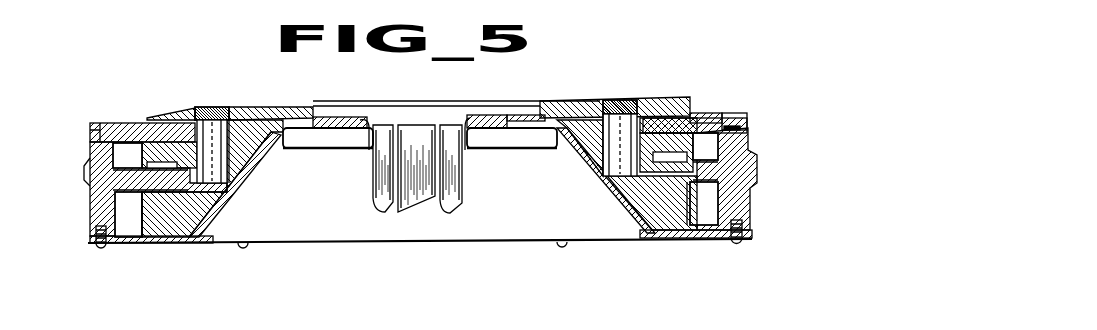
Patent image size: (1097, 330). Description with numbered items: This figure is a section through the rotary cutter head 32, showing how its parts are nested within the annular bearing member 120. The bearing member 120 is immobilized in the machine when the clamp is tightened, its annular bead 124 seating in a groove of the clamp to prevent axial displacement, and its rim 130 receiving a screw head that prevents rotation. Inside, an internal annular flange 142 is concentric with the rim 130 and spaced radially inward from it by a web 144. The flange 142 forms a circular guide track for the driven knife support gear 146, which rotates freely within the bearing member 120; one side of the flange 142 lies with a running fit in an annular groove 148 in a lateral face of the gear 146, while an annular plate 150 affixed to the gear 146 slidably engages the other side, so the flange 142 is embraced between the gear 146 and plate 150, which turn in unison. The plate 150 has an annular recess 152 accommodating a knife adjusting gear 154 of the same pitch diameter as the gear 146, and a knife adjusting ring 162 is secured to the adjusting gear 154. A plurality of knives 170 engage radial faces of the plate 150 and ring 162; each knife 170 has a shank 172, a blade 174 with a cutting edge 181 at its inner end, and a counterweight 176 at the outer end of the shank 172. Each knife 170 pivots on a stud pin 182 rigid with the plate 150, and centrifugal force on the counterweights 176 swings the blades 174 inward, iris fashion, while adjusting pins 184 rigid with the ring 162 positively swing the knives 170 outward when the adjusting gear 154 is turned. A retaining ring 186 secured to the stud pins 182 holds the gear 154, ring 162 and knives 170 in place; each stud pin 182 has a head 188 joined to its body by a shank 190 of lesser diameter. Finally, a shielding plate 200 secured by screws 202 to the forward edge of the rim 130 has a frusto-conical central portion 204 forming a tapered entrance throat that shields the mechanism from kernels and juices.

The rotary cutter head 32 is at (492, 243).
The annular bearing member 120 is at (758, 128).
The annular bead 124 is at (84, 166).
The rim 130 is at (95, 207).
The internal annular flange 142 is at (210, 195).
The web 144 is at (130, 178).
The driven knife support gear 146 is at (150, 218).
The annular groove 148 is at (212, 208).
The annular plate 150 is at (278, 150).
The annular recess 152 is at (183, 147).
The knife adjusting gear 154 is at (132, 145).
The knife adjusting ring 162 is at (92, 135).
The knife 170 is at (488, 112).
The shank 172 is at (328, 116).
The blade 174 is at (450, 174).
The counterweight 176 is at (100, 123).
The cutting edge 181 is at (452, 208).
The stud pin 182 is at (225, 160).
The adjusting pin 184 is at (736, 114).
The retaining ring 186 is at (250, 114).
The head 188 is at (218, 117).
The shank 190 is at (206, 107).
The shielding plate 200 is at (160, 244).
The screw 202 is at (96, 248).
The frusto-conical central portion 204 is at (235, 192).